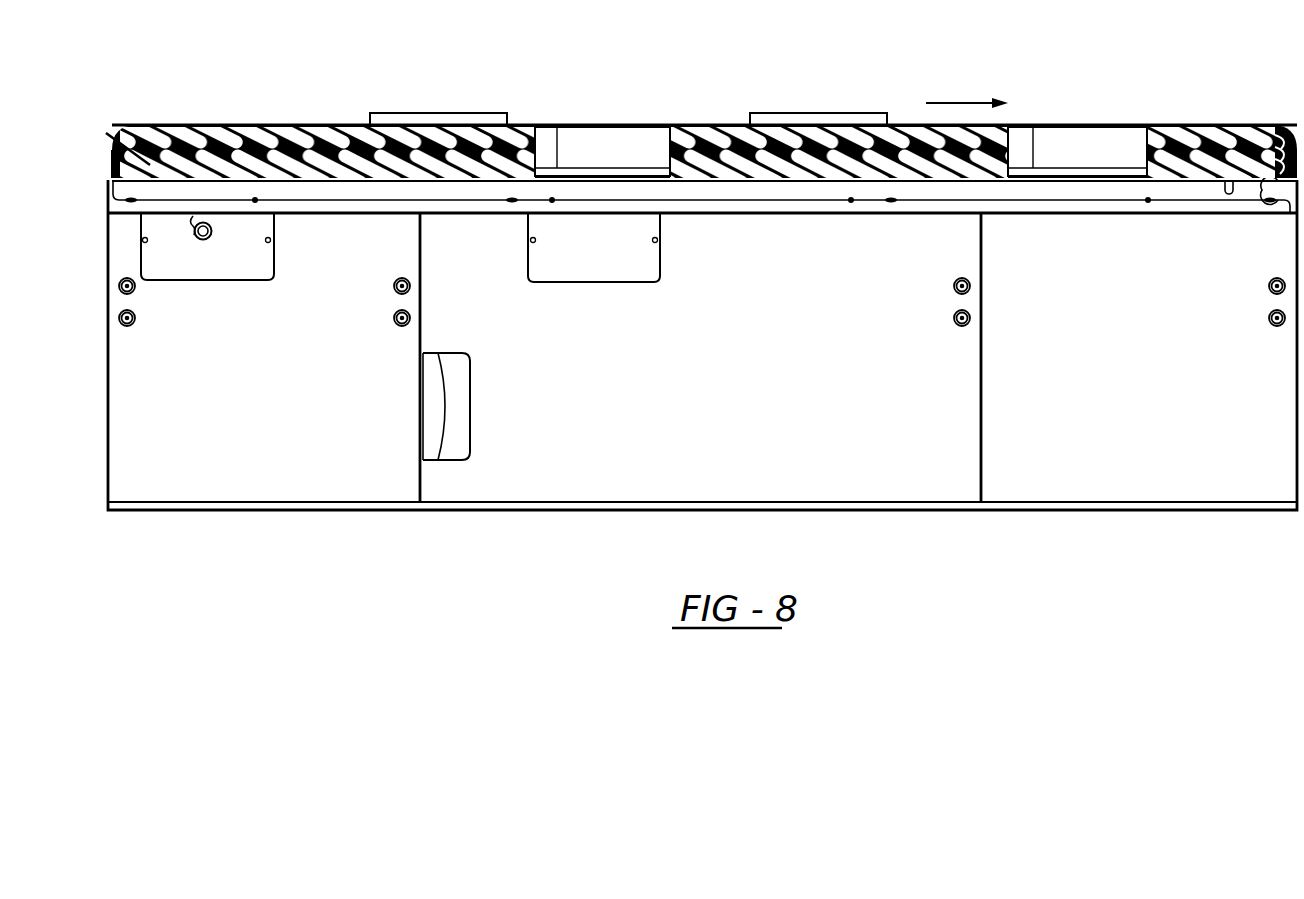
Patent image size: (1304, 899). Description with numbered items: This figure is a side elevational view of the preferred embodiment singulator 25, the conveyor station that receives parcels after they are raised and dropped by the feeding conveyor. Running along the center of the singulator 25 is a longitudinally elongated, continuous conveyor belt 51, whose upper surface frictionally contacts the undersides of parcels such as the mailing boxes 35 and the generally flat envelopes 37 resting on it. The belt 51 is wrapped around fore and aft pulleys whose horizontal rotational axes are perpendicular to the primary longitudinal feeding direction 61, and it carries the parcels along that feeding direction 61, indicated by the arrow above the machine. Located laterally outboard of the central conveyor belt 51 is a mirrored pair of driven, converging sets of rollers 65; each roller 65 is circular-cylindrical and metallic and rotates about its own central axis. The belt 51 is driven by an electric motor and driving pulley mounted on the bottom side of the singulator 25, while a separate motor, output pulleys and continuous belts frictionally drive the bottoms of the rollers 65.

The singulator conveyor station 25 is at (968, 543).
The rollers 65 is at (247, 128).
The conveyor belt 51 is at (605, 125).
The envelopes 37 is at (830, 113).
The mailing boxes 35 is at (1088, 145).
The feeding direction 61 is at (972, 103).